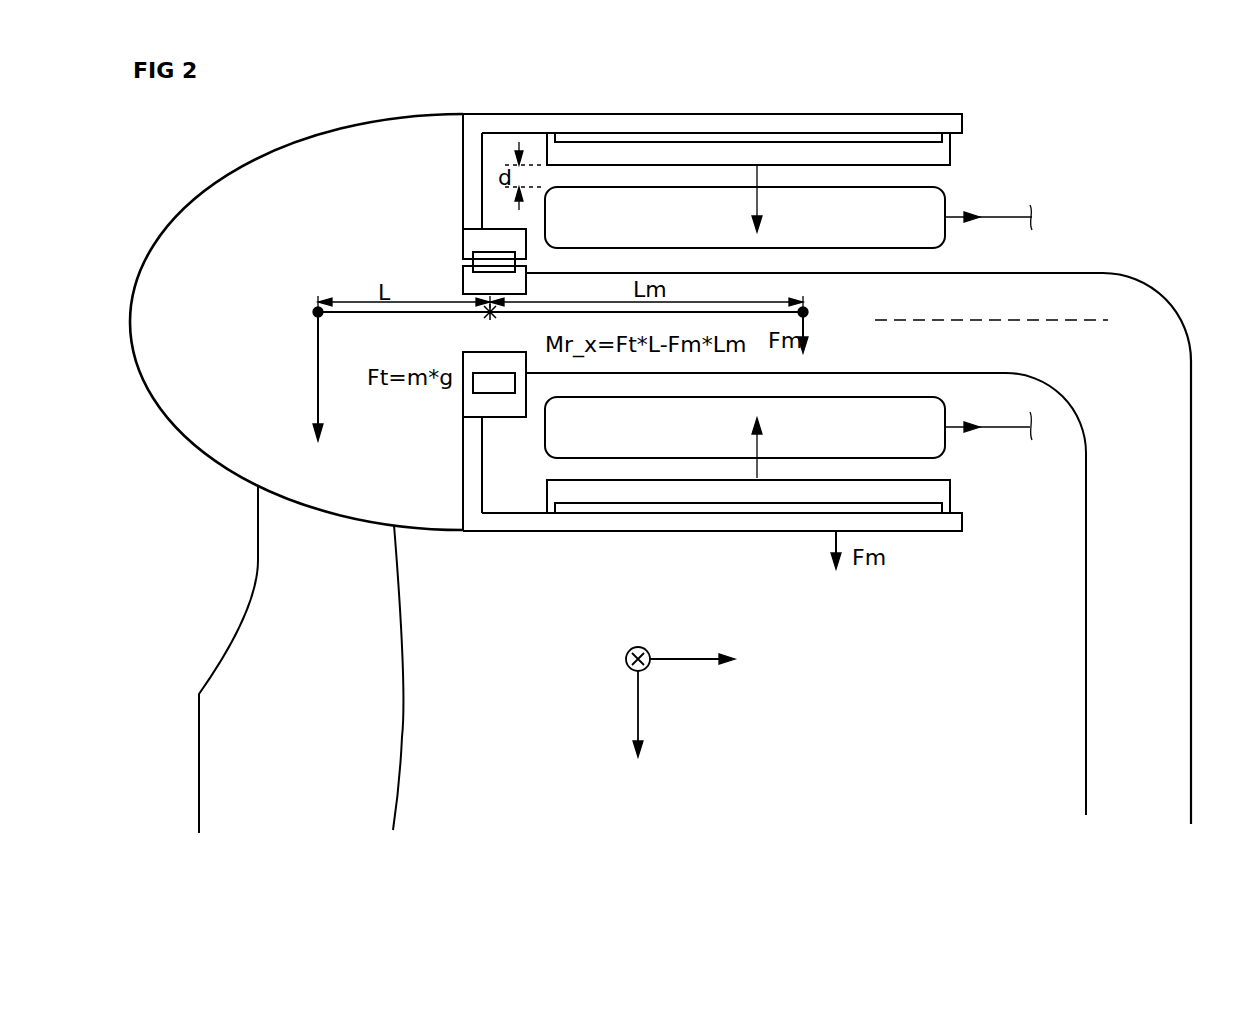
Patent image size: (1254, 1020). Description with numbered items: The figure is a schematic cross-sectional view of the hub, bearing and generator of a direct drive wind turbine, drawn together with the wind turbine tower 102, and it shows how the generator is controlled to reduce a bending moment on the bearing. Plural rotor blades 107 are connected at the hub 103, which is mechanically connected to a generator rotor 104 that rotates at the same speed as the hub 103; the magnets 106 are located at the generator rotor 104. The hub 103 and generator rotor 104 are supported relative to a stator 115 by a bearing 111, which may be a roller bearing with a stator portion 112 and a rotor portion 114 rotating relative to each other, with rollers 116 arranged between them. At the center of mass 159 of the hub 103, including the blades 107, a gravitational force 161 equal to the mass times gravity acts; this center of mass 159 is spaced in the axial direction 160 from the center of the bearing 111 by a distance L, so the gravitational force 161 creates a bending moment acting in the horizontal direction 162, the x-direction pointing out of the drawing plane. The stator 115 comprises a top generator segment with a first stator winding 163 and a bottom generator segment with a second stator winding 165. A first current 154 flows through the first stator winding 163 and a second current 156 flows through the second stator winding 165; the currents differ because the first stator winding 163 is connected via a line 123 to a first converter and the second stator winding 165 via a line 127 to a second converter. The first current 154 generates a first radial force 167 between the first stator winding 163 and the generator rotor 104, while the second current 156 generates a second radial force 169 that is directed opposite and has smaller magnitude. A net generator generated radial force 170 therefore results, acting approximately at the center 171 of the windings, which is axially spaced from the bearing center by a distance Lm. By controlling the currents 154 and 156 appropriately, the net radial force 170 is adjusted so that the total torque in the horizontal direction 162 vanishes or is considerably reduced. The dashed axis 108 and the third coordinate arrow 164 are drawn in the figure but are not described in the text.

The wind turbine tower 102 is at (1086, 590).
The hub 103 is at (378, 135).
The generator rotor 104 is at (962, 124).
The magnets 106 is at (896, 148).
The rotor blades 107 is at (400, 668).
The rotation axis 108 is at (983, 320).
The bearing 111 is at (462, 283).
The stator portion 112 is at (463, 290).
The rotor portion 114 is at (463, 238).
The stator 115 is at (584, 98).
The rollers 116 is at (473, 262).
The line 123 is at (988, 216).
The line 127 is at (980, 430).
The first current 154 is at (964, 212).
The second current 156 is at (966, 432).
The center of mass 159 is at (318, 312).
The axial direction 160 is at (686, 657).
The gravitational force 161 is at (490, 316).
The horizontal direction 162 is at (638, 646).
The first stator winding 163 is at (946, 236).
The z-axis 164 is at (639, 715).
The second stator winding 165 is at (955, 415).
The first radial force 167 is at (760, 204).
The second radial force 169 is at (760, 445).
The net generator generated radial force 170 is at (808, 336).
The center of the generator windings 171 is at (805, 312).